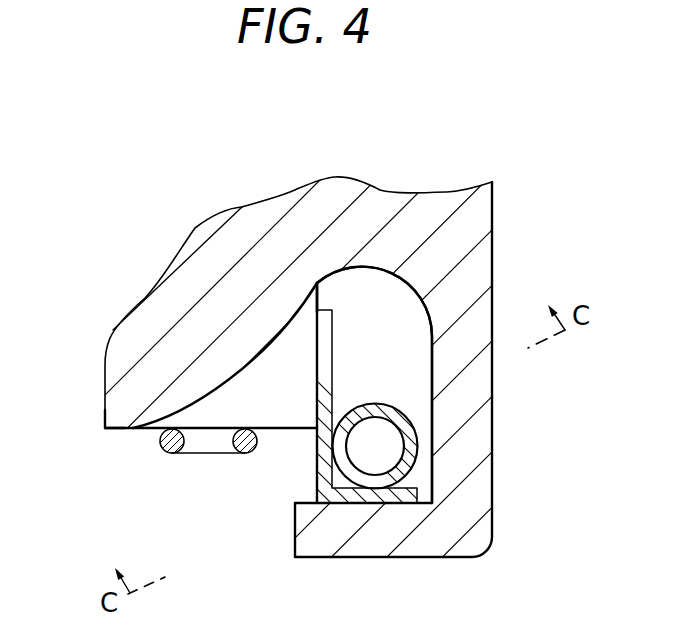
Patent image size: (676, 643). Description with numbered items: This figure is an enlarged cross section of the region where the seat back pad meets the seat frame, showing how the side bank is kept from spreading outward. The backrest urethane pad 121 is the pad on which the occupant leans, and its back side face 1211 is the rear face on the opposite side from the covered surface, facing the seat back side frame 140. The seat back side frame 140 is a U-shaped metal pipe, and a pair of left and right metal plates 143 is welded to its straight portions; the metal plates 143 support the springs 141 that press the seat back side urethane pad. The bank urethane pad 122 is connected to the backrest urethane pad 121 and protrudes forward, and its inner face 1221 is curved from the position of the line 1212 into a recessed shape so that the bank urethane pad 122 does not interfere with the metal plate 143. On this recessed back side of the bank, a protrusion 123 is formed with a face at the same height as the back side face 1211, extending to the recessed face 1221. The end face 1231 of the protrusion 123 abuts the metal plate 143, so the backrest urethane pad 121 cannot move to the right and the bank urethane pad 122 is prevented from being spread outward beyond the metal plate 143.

The backrest urethane pad 121 is at (171, 278).
The bank urethane pad 122 is at (492, 251).
The protrusion 123 is at (272, 392).
The end face 1231 is at (332, 330).
The metal plate 143 is at (330, 355).
The face inside the bank 1221 is at (410, 300).
The seat back side frame 140 is at (405, 438).
The spring 141 is at (208, 455).
The back side face 1211 is at (105, 430).
The line 1212 is at (133, 432).